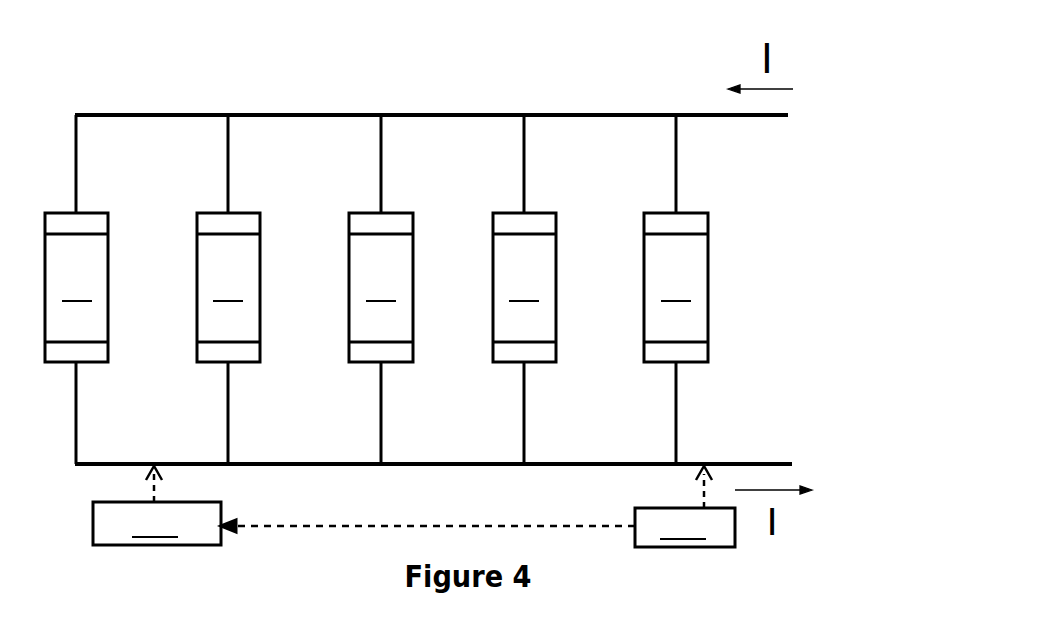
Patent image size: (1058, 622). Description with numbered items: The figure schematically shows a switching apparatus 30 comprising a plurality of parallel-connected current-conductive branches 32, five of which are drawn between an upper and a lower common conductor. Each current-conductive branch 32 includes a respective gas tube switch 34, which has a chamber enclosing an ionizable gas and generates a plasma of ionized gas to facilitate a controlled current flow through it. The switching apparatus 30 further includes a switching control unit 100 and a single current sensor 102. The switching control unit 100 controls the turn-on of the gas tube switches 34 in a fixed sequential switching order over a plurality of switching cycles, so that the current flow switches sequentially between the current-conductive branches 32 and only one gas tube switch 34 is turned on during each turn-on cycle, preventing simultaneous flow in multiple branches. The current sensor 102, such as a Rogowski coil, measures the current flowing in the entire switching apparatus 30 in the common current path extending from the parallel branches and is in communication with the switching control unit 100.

The switching apparatus 30 is at (763, 285).
The current-conductive branch 32 is at (76, 108).
The gas tube switch 34 is at (376, 287).
The switching control unit 100 is at (157, 505).
The current sensor 102 is at (478, 506).